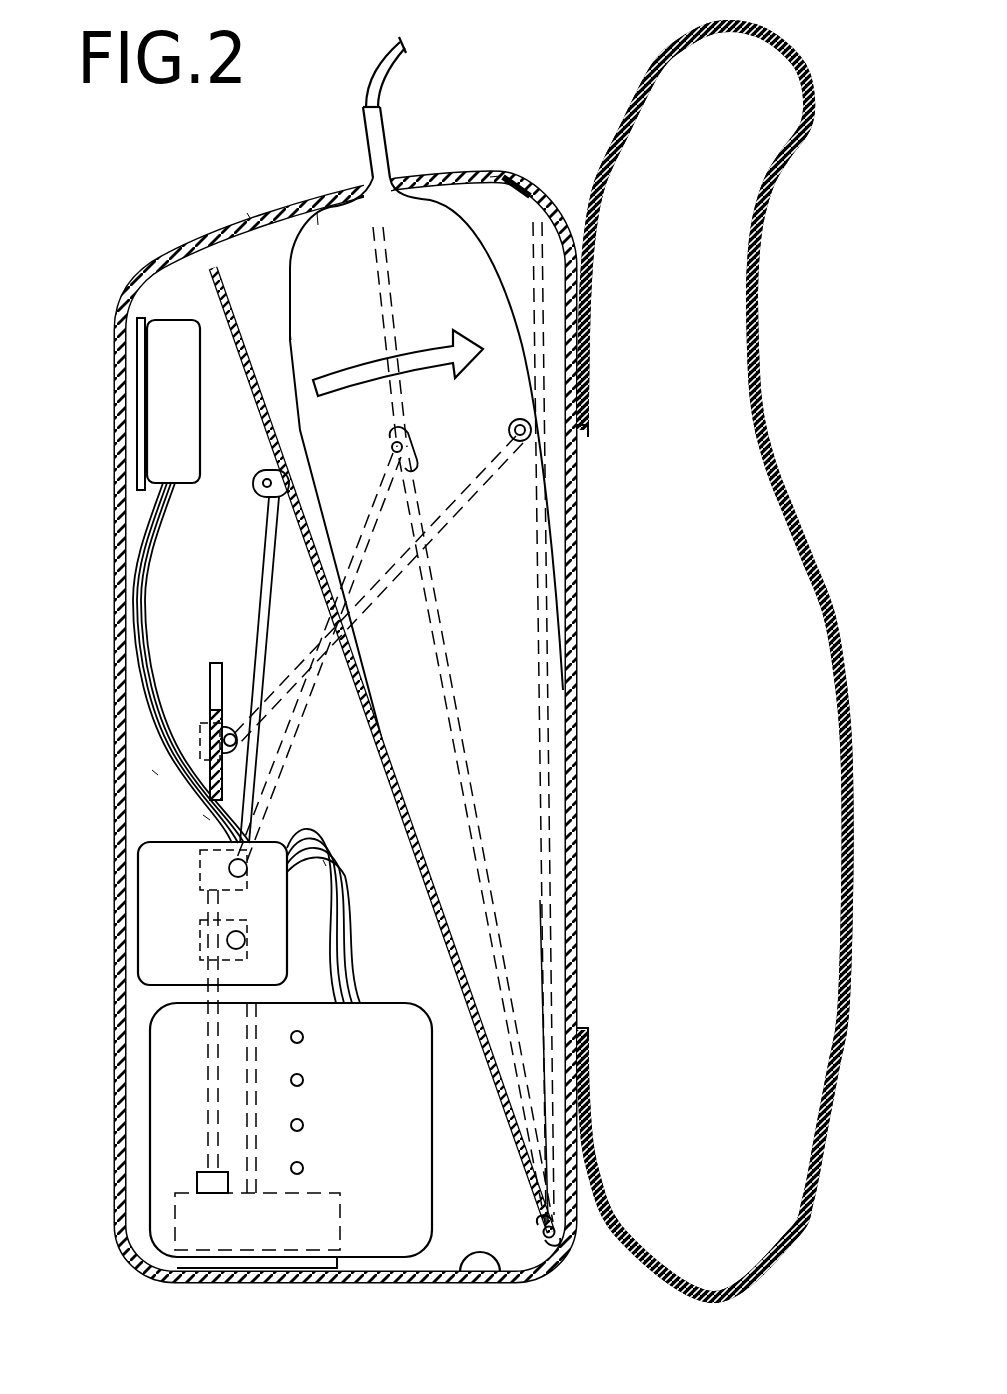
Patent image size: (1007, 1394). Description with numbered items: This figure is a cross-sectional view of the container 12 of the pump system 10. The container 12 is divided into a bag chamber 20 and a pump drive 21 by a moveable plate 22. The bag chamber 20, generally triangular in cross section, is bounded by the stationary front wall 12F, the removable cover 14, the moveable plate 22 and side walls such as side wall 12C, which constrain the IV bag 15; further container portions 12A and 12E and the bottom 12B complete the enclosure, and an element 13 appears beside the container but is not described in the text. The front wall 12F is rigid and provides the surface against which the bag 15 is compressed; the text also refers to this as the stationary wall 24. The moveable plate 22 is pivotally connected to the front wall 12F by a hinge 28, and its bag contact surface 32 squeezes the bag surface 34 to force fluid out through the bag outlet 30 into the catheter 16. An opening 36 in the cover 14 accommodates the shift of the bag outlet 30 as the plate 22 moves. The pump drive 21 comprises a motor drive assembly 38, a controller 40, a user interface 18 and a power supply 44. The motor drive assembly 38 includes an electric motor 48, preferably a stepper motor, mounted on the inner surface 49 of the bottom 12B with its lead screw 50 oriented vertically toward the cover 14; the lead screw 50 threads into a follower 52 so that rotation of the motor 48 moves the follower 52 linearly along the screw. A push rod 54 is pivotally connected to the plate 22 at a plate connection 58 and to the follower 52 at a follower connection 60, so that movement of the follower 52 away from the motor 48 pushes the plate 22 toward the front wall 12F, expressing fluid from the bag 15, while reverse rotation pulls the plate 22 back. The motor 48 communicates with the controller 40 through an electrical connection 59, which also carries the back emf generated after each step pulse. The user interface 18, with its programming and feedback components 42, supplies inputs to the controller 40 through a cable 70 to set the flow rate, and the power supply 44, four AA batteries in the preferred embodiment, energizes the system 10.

The pump system 10 is at (355, 759).
The container 12 is at (355, 752).
The housing top wall 12A is at (557, 207).
The bottom 12B is at (423, 1285).
The side wall 12C is at (420, 938).
The housing side wall 12E is at (115, 1057).
The stationary front wall 12F is at (577, 603).
The strap 13 is at (640, 80).
The removable cover 14 is at (247, 213).
The bag 15 is at (452, 250).
The catheter 16 is at (373, 62).
The user interface 18 is at (160, 1218).
The bag chamber 20 is at (233, 267).
The pump drive 21 is at (160, 775).
The moveable plate 22 is at (280, 427).
The stationary wall 24 is at (577, 490).
The hinge 28 is at (556, 1242).
The bag outlet 30 is at (387, 133).
The bag contact surface 32 is at (217, 293).
The bag surface 34 is at (317, 217).
The opening 36 is at (490, 177).
The motor drive assembly 38 is at (207, 1087).
The controller 40 is at (167, 420).
The actuator rod 42 is at (197, 1147).
The power supply 44 is at (177, 885).
The electric motor 48 is at (323, 1258).
The inner surface 49 is at (503, 1286).
The lead screw 50 is at (217, 687).
The follower 52 is at (207, 930).
The push rod 54 is at (257, 593).
The plate connection 58 is at (147, 515).
The electrical connection 59 is at (285, 467).
The follower connection 60 is at (323, 863).
The cable 70 is at (203, 817).